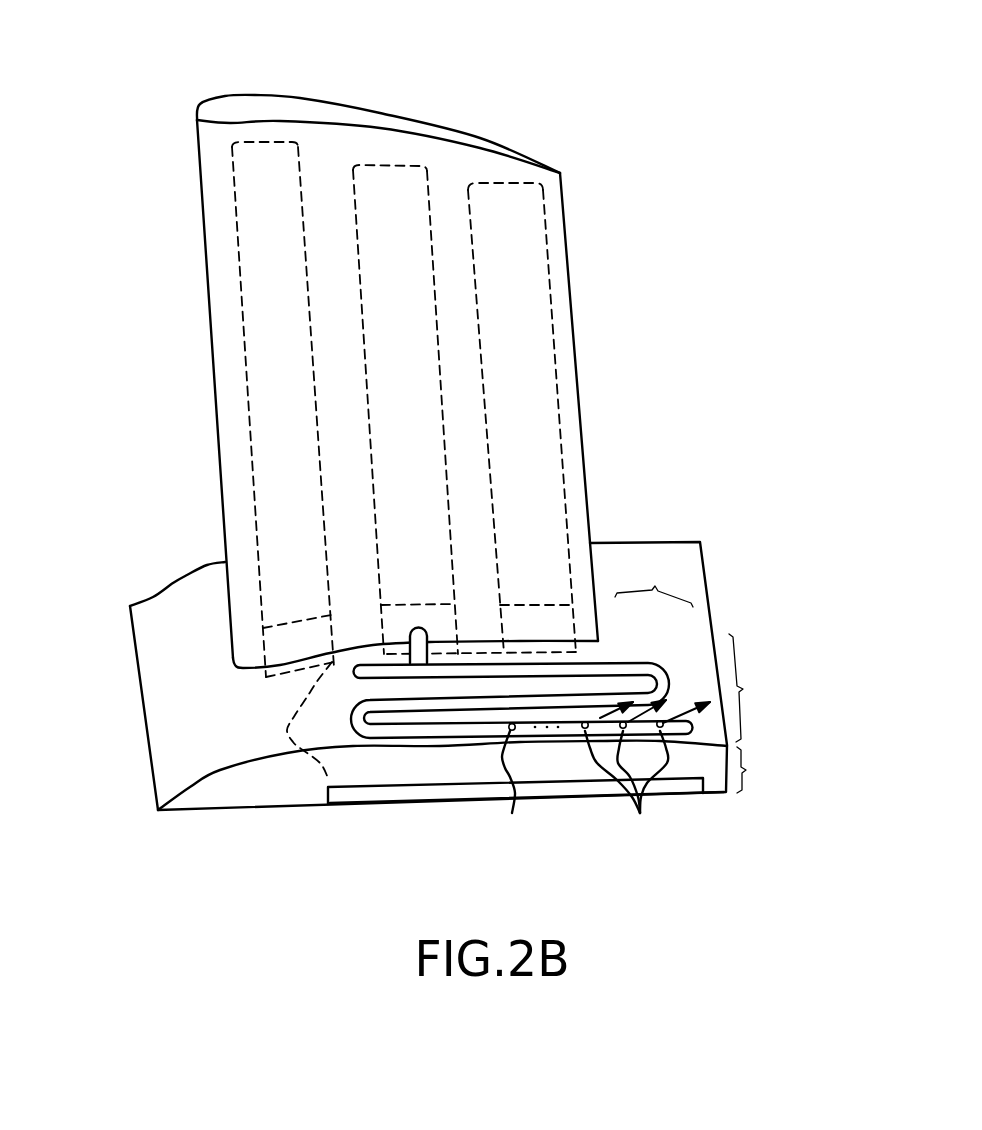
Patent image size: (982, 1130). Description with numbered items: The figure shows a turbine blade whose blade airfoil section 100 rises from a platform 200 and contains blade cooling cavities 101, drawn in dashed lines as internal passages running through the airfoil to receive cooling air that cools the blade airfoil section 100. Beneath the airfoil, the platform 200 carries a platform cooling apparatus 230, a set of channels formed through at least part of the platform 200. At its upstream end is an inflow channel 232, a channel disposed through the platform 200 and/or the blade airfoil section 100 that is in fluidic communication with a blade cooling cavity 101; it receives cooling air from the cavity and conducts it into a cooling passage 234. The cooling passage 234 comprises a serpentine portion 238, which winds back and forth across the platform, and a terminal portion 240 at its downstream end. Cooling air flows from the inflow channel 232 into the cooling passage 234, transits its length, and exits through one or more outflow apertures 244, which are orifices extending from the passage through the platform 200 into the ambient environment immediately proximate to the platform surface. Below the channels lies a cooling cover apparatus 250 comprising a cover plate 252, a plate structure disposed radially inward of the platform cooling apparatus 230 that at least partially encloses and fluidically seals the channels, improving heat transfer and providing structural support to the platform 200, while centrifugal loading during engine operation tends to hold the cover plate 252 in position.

The blade airfoil section 100 is at (287, 108).
The blade cooling cavities 101 is at (248, 193).
The platform 200 is at (693, 568).
The platform cooling apparatus 230 is at (756, 688).
The inflow channel 232 is at (432, 642).
The cooling passage 234 is at (654, 584).
The serpentine portion 238 is at (507, 671).
The terminal portion 240 is at (659, 723).
The outflow apertures 244 is at (578, 785).
The cooling cover apparatus 250 is at (762, 770).
The cover plate 252 is at (545, 795).